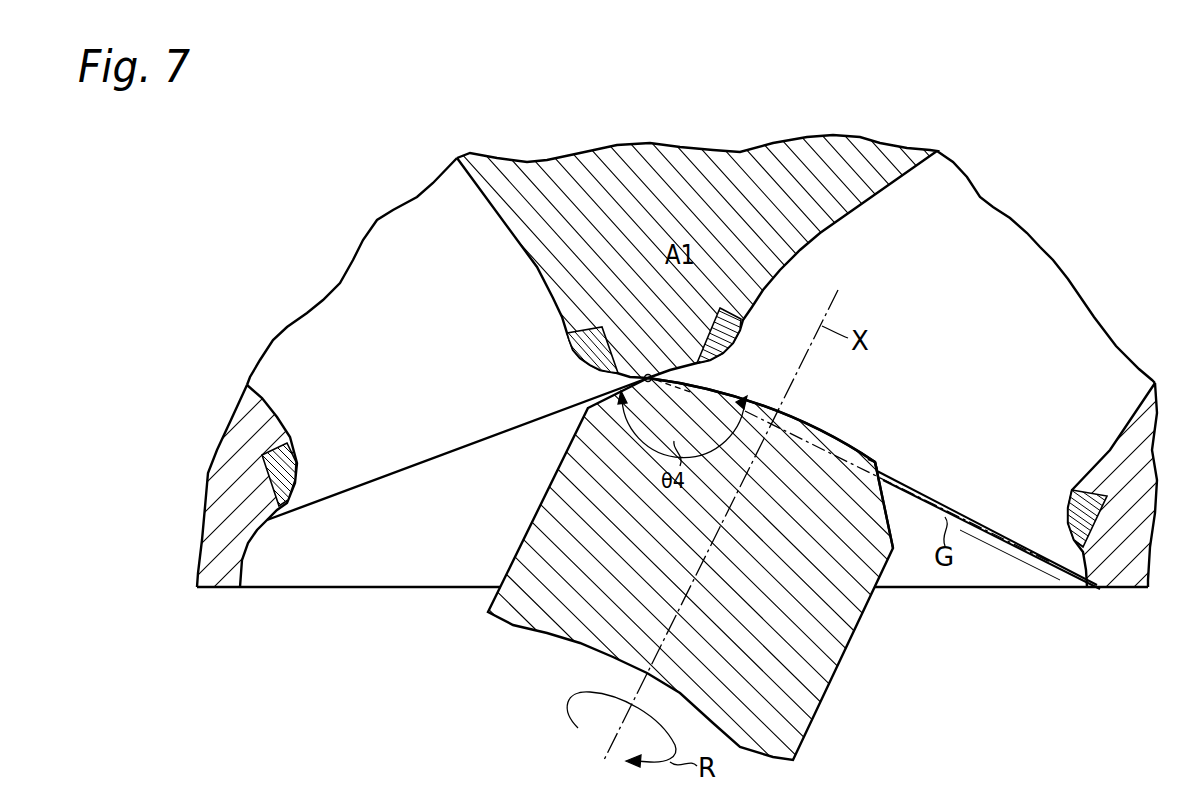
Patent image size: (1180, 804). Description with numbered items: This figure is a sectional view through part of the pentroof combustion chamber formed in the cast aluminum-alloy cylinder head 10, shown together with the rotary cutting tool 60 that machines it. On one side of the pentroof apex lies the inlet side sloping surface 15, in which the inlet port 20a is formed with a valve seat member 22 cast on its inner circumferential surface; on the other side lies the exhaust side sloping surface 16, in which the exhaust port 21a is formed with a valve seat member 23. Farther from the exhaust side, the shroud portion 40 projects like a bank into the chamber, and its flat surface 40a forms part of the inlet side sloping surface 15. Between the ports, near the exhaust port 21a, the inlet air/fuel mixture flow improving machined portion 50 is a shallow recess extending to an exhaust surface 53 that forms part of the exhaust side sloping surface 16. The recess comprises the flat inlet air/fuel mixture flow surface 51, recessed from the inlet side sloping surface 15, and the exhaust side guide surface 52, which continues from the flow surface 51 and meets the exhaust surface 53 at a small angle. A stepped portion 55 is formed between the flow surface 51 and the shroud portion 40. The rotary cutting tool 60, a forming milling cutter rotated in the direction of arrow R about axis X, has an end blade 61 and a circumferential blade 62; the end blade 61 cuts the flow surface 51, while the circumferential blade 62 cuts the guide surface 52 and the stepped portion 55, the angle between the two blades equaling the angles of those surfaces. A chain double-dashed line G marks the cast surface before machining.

The cylinder head 10 is at (741, 160).
The inlet side sloping surface 15 is at (982, 532).
The exhaust side sloping surface 16 is at (428, 472).
The inlet port 20a is at (1057, 490).
The exhaust port 21a is at (267, 491).
The valve seat member 22 is at (1070, 509).
The valve seat member 23 is at (298, 470).
The shroud portion 40 is at (1052, 543).
The surface of the shroud portion 40a is at (1007, 548).
The inlet air/fuel mixture flow improving machined portion 50 is at (792, 419).
The inlet air/fuel mixture flow surface 51 is at (727, 387).
The exhaust side guide surface 52 is at (657, 377).
The exhaust surface 53 is at (648, 377).
The stepped portion 55 is at (878, 468).
The rotary cutting tool 60 is at (814, 690).
The end blade 61 is at (830, 434).
The circumferential blade 62 is at (888, 506).